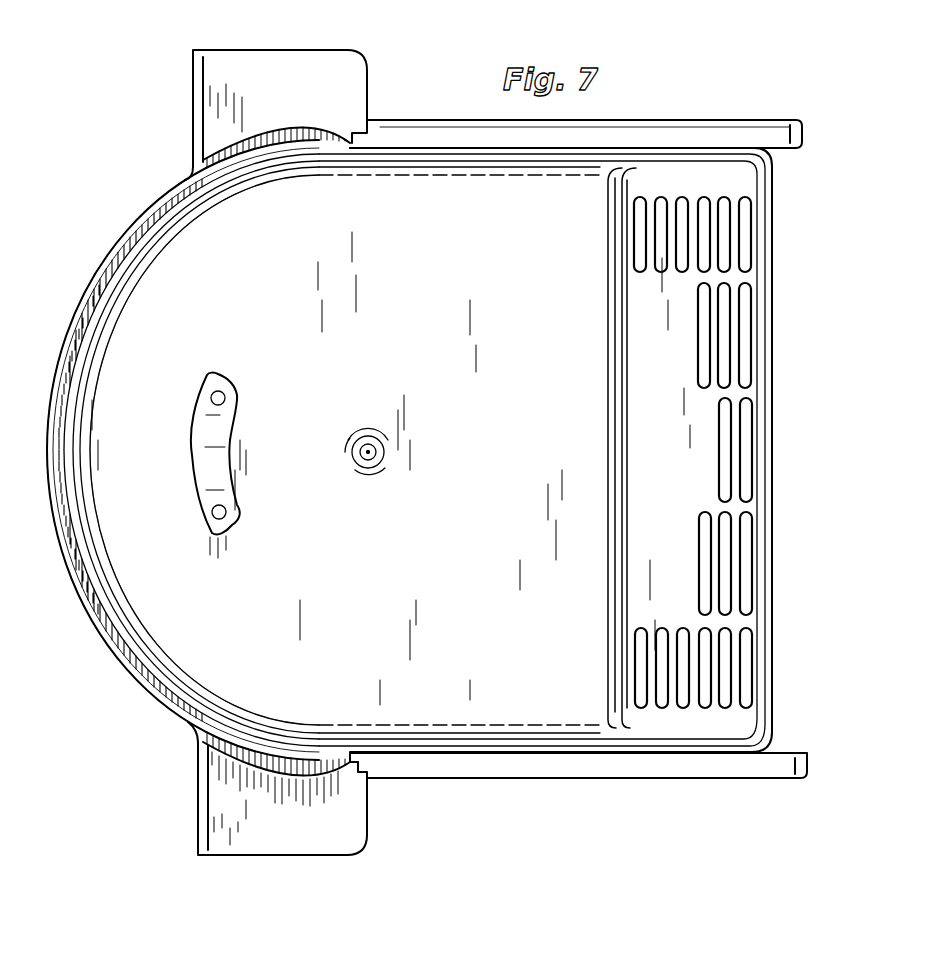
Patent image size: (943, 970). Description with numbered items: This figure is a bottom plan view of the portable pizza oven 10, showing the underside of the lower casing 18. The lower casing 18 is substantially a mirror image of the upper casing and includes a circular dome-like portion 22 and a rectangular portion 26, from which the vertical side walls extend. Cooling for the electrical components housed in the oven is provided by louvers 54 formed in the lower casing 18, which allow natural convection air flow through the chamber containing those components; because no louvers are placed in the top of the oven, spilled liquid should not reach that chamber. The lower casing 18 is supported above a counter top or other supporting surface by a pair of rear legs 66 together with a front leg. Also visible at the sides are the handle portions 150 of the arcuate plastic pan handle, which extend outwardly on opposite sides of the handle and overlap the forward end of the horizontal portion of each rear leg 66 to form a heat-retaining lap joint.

The portable pizza oven 10 is at (806, 110).
The lower casing 18 is at (189, 630).
The circular dome-like portion 22 is at (226, 232).
The rectangular portion 26 is at (780, 261).
The louvers 54 is at (689, 407).
The rear legs 66 is at (717, 93).
The handle portions 150 is at (287, 60).